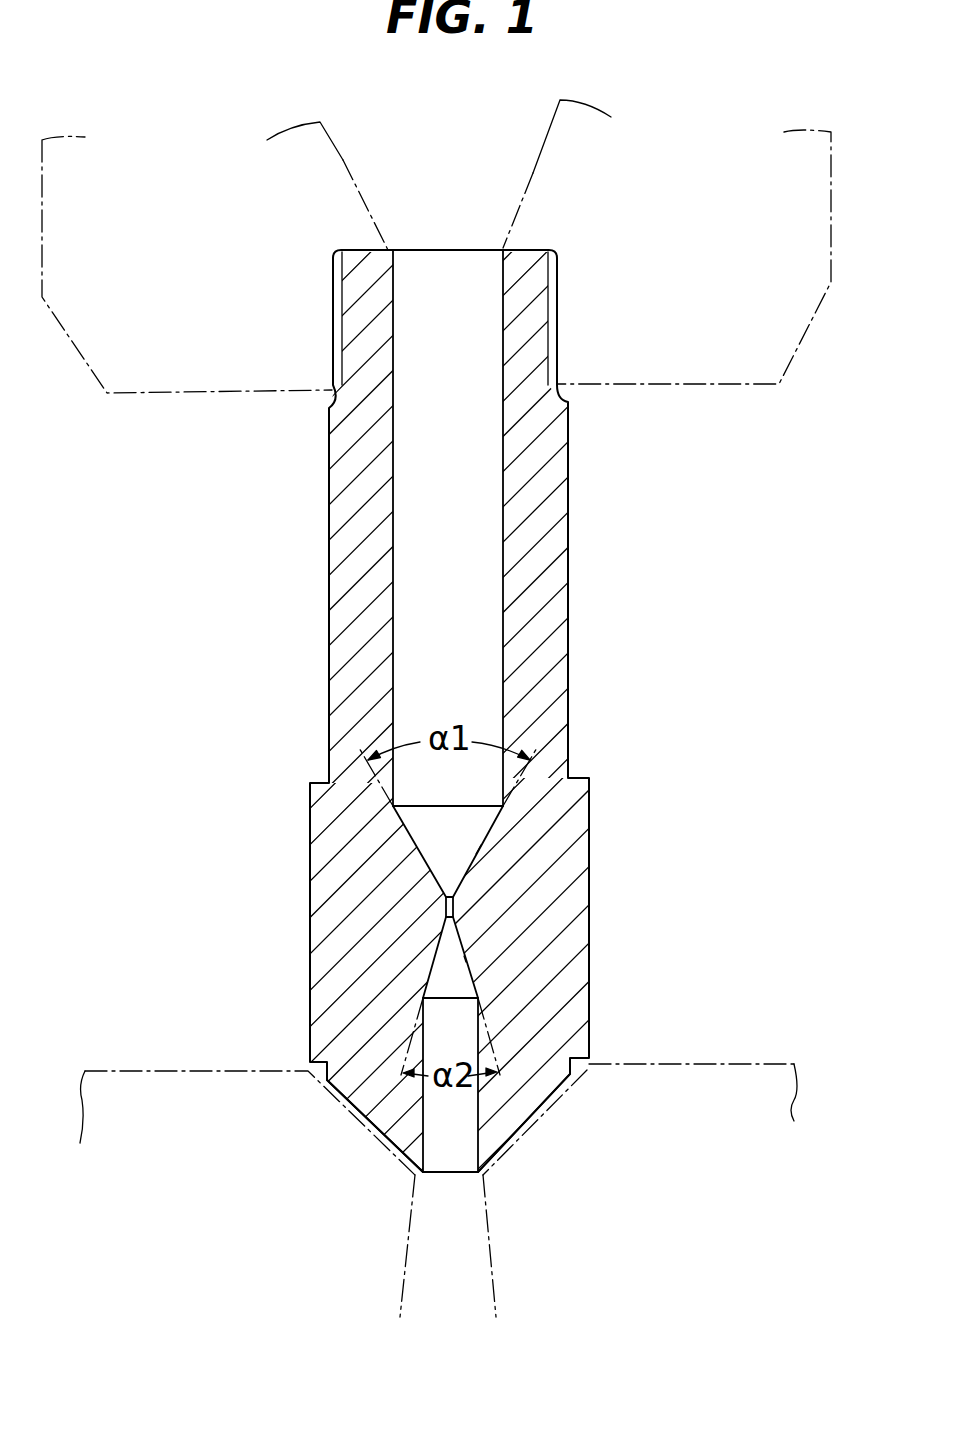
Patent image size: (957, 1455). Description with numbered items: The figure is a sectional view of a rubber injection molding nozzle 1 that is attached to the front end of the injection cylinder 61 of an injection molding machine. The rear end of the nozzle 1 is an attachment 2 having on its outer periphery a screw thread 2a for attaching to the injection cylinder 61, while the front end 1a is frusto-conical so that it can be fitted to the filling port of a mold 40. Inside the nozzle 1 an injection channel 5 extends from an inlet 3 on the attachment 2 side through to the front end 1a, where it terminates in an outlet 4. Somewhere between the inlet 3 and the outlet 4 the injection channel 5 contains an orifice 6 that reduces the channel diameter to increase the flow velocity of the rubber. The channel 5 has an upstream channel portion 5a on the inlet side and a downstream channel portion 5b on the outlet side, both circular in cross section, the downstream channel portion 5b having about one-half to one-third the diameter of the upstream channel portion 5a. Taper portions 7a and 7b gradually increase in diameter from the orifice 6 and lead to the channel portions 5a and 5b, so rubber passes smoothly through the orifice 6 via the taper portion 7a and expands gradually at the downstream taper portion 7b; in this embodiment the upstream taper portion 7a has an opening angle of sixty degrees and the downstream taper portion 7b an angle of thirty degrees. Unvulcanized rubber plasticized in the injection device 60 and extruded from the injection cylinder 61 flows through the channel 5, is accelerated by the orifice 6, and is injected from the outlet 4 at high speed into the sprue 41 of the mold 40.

The injection molding nozzle 1 is at (303, 680).
The front end 1a is at (528, 1100).
The attachment 2 is at (531, 255).
The screw thread 2a is at (337, 327).
The inlet 3 is at (438, 260).
The outlet 4 is at (448, 1160).
The injection channel 5 is at (408, 540).
The upstream channel portion 5a is at (468, 630).
The downstream channel portion 5b is at (457, 1030).
The orifice 6 is at (447, 912).
The upstream taper portion 7a is at (480, 847).
The downstream taper portion 7b is at (461, 943).
The mold 40 is at (754, 1056).
The sprue 41 is at (491, 1258).
The injection device 60 is at (737, 400).
The injection cylinder 61 is at (135, 288).